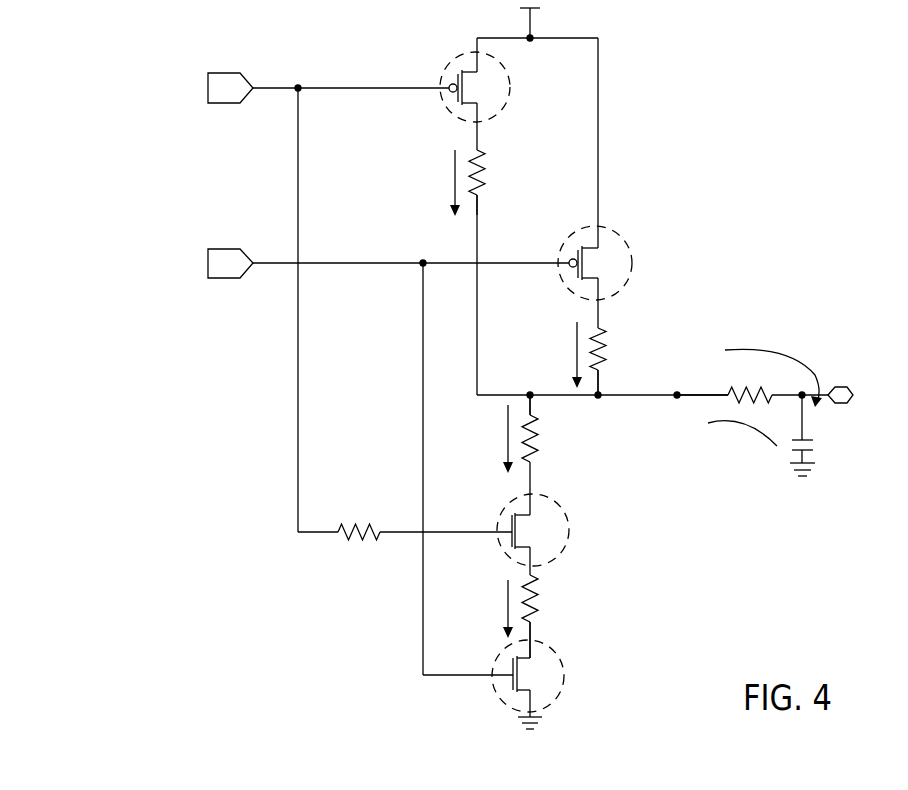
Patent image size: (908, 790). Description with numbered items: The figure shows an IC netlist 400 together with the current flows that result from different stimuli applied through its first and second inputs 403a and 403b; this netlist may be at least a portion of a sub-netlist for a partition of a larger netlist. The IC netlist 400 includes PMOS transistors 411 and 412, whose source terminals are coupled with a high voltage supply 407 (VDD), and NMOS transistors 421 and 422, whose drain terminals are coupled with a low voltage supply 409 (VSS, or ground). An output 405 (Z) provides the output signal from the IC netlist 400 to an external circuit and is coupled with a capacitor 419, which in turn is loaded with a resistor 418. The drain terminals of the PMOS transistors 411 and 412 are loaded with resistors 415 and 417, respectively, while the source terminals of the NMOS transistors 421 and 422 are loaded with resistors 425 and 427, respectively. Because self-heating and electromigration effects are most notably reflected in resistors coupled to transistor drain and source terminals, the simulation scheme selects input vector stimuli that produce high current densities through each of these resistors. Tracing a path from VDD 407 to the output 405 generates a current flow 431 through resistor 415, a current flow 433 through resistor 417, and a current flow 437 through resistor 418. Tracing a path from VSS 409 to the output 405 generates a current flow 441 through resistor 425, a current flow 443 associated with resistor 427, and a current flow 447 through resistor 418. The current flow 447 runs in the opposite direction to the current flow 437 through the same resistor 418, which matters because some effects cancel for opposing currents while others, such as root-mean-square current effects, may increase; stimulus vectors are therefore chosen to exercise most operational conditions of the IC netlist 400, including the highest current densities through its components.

The IC netlist 400 is at (148, 42).
The input 403a is at (227, 104).
The input 403b is at (227, 279).
The output 405 is at (840, 385).
The high voltage supply 407 is at (533, 13).
The low voltage supply 409 is at (542, 720).
The PMOS transistor 411 is at (456, 62).
The PMOS transistor 412 is at (612, 232).
The resistor 415 is at (480, 197).
The resistor 417 is at (603, 372).
The resistor 418 is at (725, 400).
The capacitor 419 is at (812, 455).
The NMOS transistor 421 is at (558, 505).
The NMOS transistor 422 is at (502, 705).
The resistor 425 is at (537, 419).
The resistor 427 is at (537, 622).
The current flow 431 is at (455, 185).
The current flow 433 is at (575, 355).
The current flow 437 is at (800, 352).
The current flow 441 is at (507, 440).
The current flow 443 is at (507, 605).
The current flow 447 is at (707, 426).